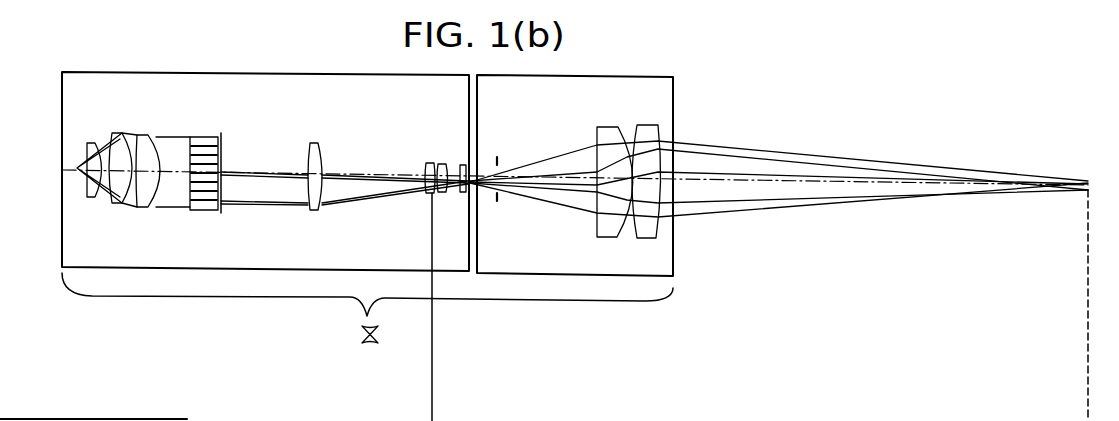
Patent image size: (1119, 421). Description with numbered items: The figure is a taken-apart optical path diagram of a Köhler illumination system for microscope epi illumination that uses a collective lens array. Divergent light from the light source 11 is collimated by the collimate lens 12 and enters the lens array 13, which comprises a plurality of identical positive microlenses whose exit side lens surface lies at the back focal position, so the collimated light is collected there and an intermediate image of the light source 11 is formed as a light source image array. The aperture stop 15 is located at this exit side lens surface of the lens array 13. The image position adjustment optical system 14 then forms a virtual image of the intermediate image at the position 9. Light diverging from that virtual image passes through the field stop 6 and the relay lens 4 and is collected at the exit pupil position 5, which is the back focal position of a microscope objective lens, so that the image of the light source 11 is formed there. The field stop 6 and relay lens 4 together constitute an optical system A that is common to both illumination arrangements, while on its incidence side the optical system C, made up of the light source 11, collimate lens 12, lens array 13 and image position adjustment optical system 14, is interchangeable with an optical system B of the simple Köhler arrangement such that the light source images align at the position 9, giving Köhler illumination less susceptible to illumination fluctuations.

The relay lens 4 is at (658, 125).
The exit pupil position 5 is at (1089, 180).
The field stop 6 is at (498, 168).
The position 9 is at (431, 348).
The light source 11 is at (77, 168).
The collimate lens 12 is at (168, 131).
The lens array 13 is at (205, 140).
The image position adjustment optical system 14 is at (465, 133).
The aperture stop 15 is at (222, 137).
The optical system A is at (575, 277).
The optical system B is at (146, 418).
The optical system C is at (270, 272).